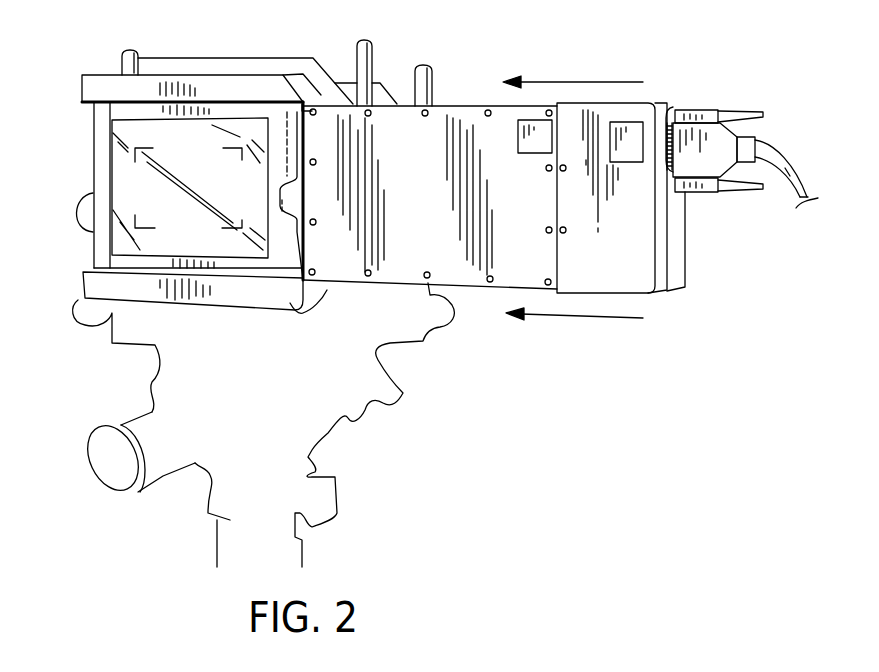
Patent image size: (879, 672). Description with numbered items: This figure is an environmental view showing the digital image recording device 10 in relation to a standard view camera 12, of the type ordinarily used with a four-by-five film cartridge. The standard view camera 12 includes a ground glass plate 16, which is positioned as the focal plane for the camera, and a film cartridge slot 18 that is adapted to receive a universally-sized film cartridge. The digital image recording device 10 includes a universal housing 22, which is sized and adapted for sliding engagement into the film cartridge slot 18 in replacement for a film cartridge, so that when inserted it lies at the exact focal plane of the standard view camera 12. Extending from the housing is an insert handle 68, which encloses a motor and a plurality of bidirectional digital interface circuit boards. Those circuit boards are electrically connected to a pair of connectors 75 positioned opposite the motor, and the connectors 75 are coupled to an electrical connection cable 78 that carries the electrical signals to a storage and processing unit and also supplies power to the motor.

The digital image recording device 10 is at (588, 68).
The standard view camera 12 is at (356, 338).
The ground glass plate 16 is at (132, 180).
The film cartridge slot 18 is at (313, 110).
The universal housing 22 is at (441, 113).
The insert handle 68 is at (623, 108).
The pair of connectors 75 is at (668, 108).
The electrical connection cable 78 is at (772, 155).